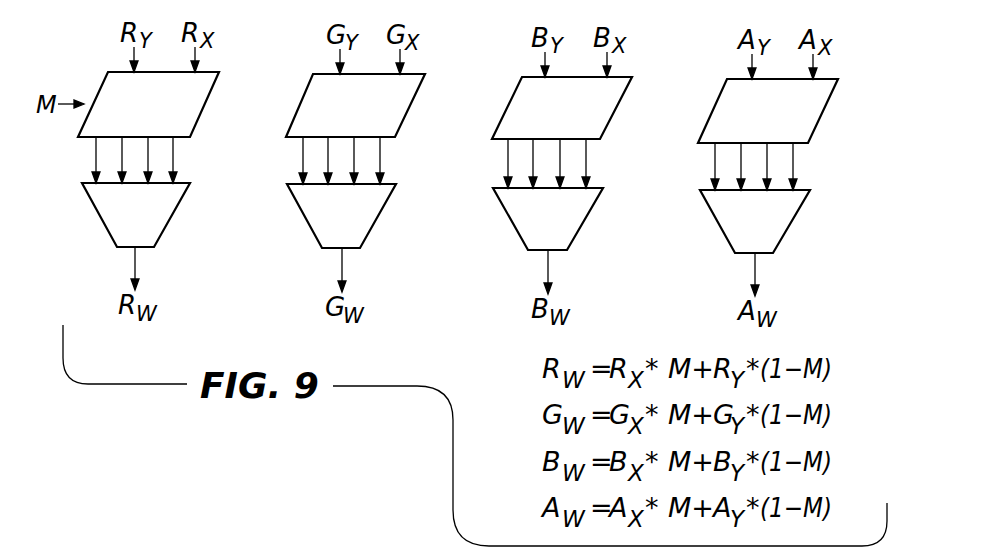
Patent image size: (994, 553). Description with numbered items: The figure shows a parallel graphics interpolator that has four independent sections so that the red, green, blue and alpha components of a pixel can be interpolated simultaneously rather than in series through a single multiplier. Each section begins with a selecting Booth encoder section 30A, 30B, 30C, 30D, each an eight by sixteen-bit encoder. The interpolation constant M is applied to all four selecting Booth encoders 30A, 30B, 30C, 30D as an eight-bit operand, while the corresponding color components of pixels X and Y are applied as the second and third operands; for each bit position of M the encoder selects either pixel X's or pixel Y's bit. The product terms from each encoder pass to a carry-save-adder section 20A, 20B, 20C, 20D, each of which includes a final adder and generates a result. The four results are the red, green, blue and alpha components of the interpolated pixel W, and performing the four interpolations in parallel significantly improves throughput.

The selecting Booth encoder section 30A is at (204, 105).
The selecting Booth encoder section 30B is at (410, 107).
The selecting Booth encoder section 30C is at (617, 108).
The selecting Booth encoder section 30D is at (812, 138).
The carry-save-adder section 20A is at (175, 215).
The carry-save-adder section 20B is at (380, 218).
The carry-save-adder section 20C is at (586, 220).
The carry-save-adder section 20D is at (793, 222).